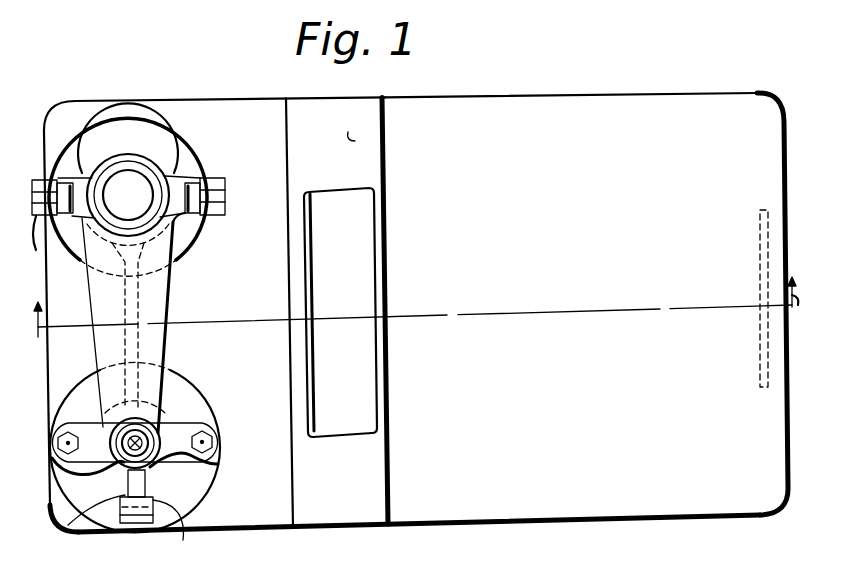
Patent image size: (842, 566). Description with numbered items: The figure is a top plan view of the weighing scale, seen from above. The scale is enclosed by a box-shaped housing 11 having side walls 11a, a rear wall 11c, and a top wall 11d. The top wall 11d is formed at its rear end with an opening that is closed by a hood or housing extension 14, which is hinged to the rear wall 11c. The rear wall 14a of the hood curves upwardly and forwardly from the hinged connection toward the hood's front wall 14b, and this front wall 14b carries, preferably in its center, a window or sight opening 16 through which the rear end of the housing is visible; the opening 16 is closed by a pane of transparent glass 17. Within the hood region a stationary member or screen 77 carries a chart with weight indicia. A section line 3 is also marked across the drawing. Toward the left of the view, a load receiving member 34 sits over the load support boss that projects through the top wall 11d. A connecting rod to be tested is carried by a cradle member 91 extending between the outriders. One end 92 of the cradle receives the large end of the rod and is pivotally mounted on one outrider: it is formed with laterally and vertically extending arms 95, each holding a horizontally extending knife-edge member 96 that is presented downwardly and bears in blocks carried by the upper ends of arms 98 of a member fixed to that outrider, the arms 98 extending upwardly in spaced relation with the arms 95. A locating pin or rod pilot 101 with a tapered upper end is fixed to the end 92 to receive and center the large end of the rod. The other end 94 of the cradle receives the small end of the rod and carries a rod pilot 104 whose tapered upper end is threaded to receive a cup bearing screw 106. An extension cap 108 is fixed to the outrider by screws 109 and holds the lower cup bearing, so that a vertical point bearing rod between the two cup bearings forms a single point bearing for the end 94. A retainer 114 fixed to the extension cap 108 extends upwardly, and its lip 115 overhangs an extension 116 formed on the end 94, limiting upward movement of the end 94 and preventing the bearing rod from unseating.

The housing 11 is at (240, 101).
The side walls 11a is at (613, 554).
The rear wall 11c is at (789, 128).
The top wall 11d is at (256, 311).
The hood or housing extension 14 is at (612, 94).
The rear wall of the hood 14a is at (567, 456).
The front wall of the hood 14b is at (355, 141).
The section line 3- 3 is at (413, 310).
The window or sight opening 16 is at (368, 255).
The pane of transparent glass 17 is at (362, 377).
The stationary member or screen 77 is at (760, 240).
The load receiving member 34 is at (104, 133).
The end of the cradle 92 is at (140, 153).
The arms 95 is at (52, 180).
The knife-edge member 96 is at (36, 180).
The arms 98 is at (217, 218).
The locating pin or rod pilot 101 is at (129, 195).
The cradle member 91 is at (159, 335).
The cup bearing screw 106 is at (118, 432).
The extension cap 108 is at (173, 429).
The screws 109 is at (214, 440).
The rod pilot 104 is at (148, 447).
The end of the cradle 94 is at (152, 458).
The retainer 114 is at (127, 518).
The upper end or lip of the retainer 115 is at (183, 530).
The extension 116 is at (74, 533).